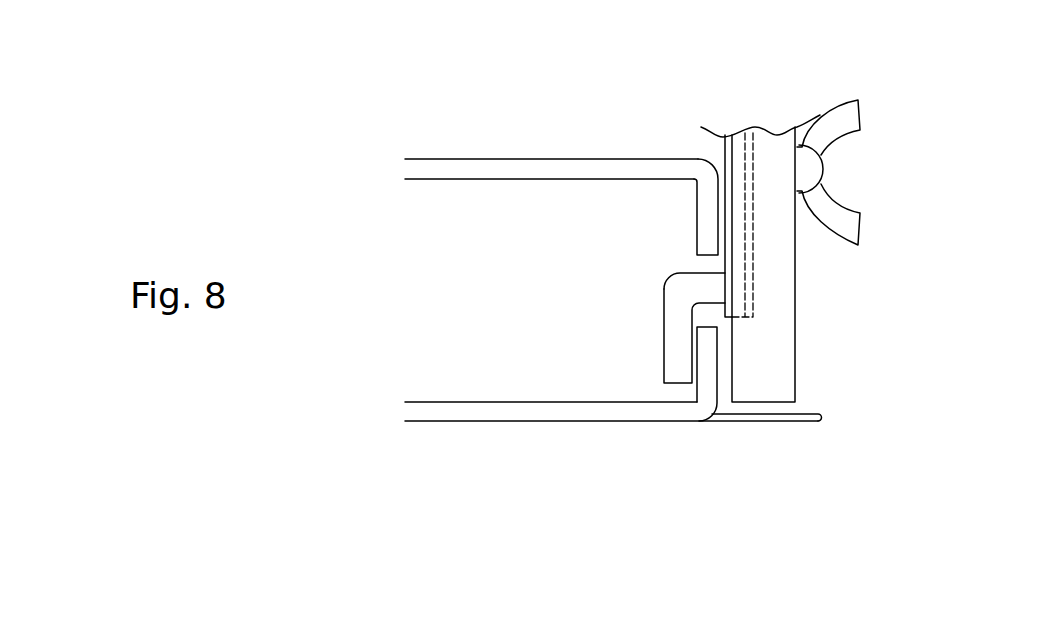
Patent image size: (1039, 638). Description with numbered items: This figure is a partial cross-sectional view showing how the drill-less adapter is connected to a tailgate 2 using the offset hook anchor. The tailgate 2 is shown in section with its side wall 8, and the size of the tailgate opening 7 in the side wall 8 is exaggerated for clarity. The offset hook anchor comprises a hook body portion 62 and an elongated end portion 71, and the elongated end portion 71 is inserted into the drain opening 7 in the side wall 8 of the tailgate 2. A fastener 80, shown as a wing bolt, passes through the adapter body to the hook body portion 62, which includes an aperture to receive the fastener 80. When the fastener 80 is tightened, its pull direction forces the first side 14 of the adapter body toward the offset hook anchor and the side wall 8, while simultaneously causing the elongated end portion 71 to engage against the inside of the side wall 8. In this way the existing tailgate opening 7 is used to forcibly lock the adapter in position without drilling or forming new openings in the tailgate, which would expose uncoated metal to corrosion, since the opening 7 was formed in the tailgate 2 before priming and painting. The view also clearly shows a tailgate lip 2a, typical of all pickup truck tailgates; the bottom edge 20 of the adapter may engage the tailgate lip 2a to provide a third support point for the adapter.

The tailgate 2 is at (513, 157).
The tailgate lip 2a is at (800, 422).
The tailgate opening 7 is at (700, 263).
The side wall 8 is at (697, 203).
The first side 14 is at (730, 368).
The bottom edge 20 is at (763, 402).
The hook body portion 62 is at (718, 160).
The elongated end portion 71 is at (673, 343).
The fastener 80 is at (823, 170).